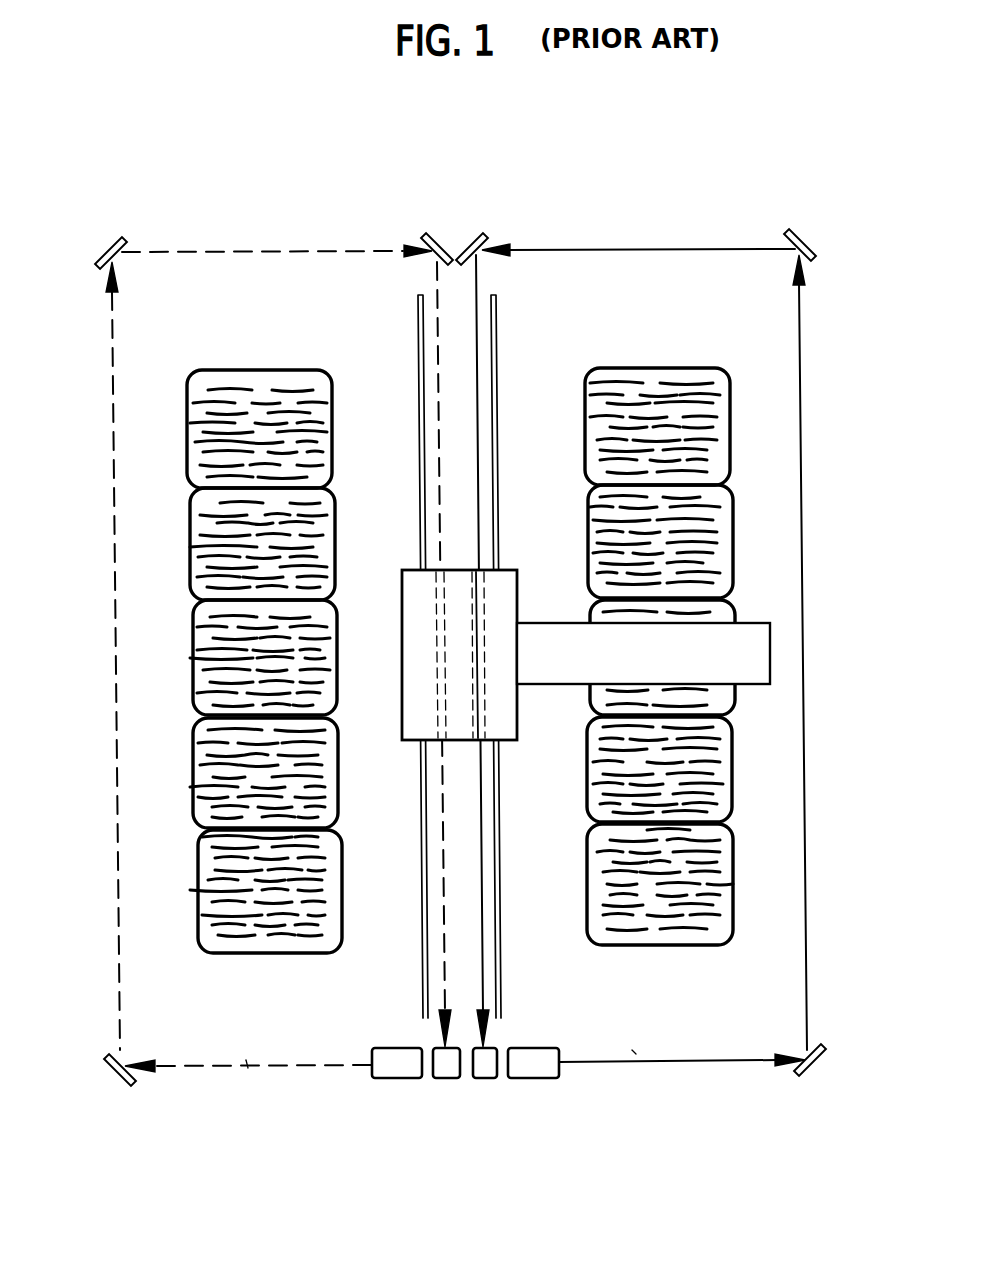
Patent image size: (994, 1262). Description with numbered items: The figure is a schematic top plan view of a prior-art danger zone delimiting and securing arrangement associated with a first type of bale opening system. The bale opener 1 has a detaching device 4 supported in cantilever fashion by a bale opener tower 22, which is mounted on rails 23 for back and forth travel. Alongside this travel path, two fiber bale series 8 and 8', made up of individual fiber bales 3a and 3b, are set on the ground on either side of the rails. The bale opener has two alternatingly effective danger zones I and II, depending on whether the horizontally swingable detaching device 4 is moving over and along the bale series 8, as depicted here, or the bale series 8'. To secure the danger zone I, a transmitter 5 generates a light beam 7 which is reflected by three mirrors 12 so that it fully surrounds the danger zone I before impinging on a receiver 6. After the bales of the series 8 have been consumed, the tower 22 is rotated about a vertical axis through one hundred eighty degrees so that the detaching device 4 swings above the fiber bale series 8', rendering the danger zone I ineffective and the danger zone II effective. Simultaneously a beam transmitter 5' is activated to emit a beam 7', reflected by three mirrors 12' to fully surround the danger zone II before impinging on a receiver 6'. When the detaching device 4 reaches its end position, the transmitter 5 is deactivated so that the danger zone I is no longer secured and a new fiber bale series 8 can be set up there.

The bale opener 1 is at (621, 637).
The fiber bales of first row 3a is at (713, 406).
The fiber bales of second row 3b is at (190, 424).
The detaching device 4 is at (770, 642).
The transmitter 5 is at (533, 1092).
The beam transmitter 5' is at (397, 1092).
The receiver 6 is at (487, 1092).
The receiver 6' is at (448, 1092).
The light beam 7 is at (641, 689).
The beam 7' is at (255, 658).
The fiber bale series 8 is at (687, 626).
The fiber bale series 8' is at (236, 631).
The mirrors 12 is at (653, 658).
The mirrors 12' is at (262, 660).
The bale opener tower 22 is at (499, 581).
The rails 23 is at (419, 318).
The danger zone I is at (628, 1043).
The danger zone II is at (273, 1025).